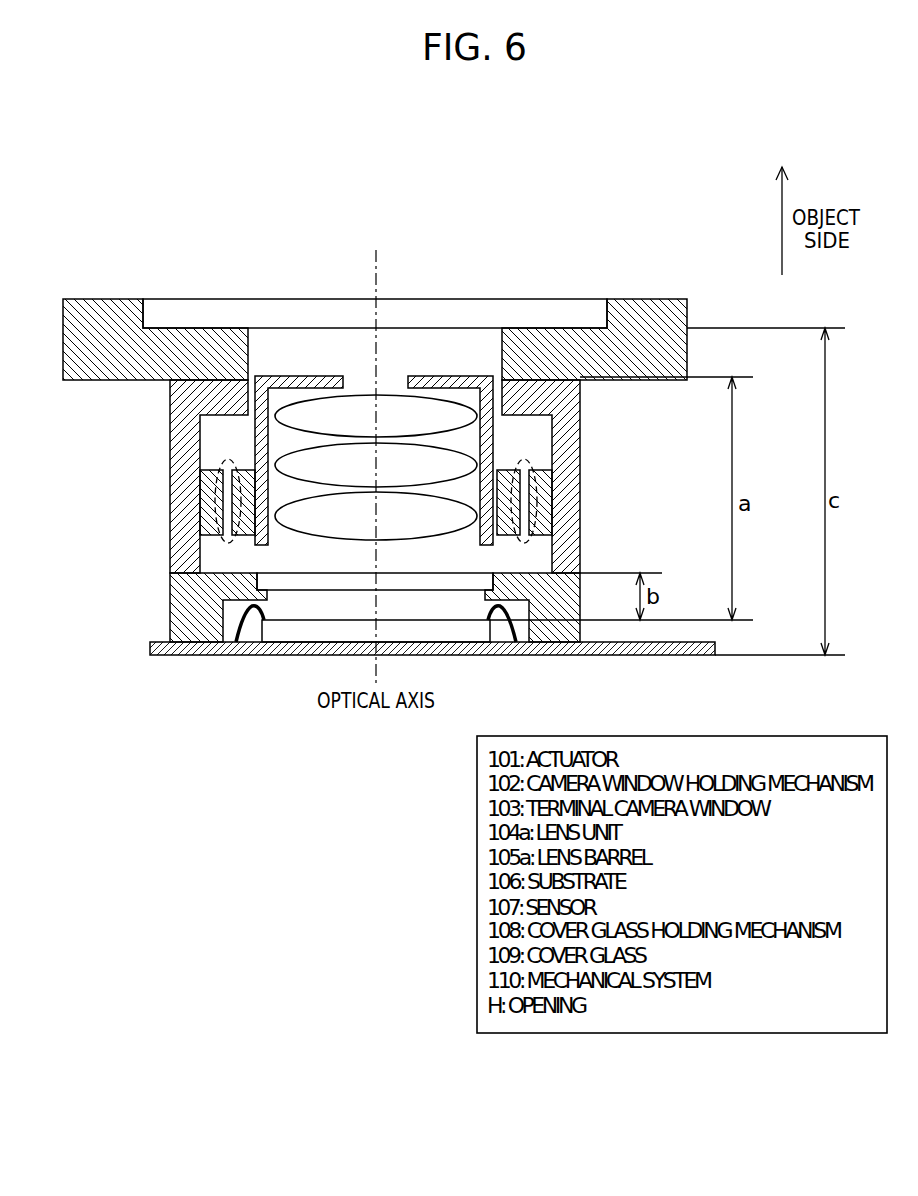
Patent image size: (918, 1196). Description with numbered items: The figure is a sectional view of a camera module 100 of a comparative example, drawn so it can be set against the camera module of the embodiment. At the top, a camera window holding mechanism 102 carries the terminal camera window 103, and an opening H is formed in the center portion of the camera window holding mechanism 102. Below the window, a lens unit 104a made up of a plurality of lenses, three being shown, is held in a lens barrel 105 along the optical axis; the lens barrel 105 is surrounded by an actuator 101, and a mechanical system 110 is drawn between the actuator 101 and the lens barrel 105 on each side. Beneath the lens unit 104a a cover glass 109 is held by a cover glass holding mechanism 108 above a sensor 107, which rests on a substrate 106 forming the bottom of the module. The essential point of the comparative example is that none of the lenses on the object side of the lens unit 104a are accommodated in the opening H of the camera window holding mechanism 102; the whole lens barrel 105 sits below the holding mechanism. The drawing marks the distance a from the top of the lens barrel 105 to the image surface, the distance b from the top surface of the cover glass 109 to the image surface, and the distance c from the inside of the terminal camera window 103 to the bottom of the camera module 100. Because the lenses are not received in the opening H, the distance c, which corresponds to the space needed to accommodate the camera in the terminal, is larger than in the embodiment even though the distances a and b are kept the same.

The camera module 100 is at (627, 191).
The actuator 101 is at (177, 454).
The camera window holding mechanism 102 is at (105, 312).
The terminal camera window 103 is at (315, 312).
The lens unit 104a is at (402, 517).
The lens barrel 105 is at (268, 377).
The substrate 106 is at (225, 648).
The sensor 107 is at (288, 636).
The cover glass holding mechanism 108 is at (172, 606).
The cover glass 109 is at (465, 584).
The mechanical system 110 is at (208, 498).
The opening H is at (355, 377).